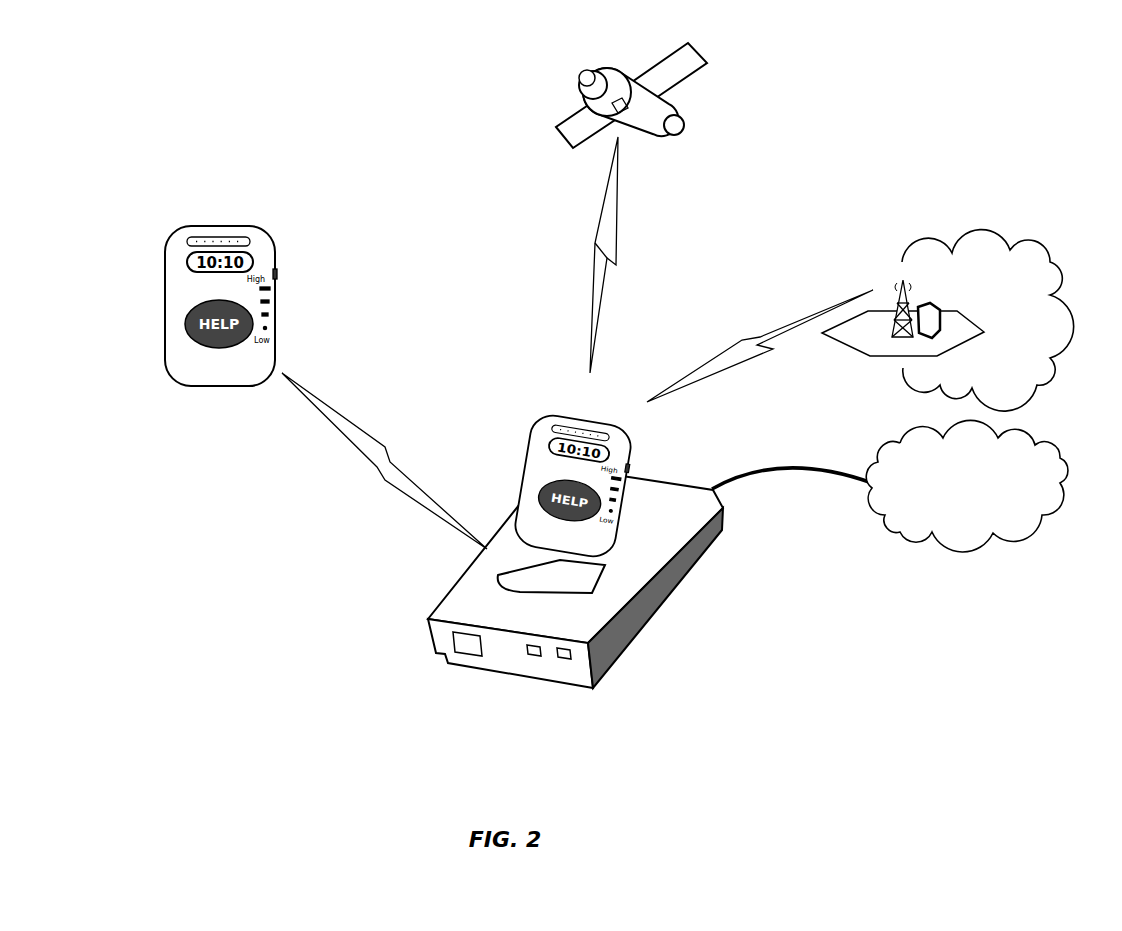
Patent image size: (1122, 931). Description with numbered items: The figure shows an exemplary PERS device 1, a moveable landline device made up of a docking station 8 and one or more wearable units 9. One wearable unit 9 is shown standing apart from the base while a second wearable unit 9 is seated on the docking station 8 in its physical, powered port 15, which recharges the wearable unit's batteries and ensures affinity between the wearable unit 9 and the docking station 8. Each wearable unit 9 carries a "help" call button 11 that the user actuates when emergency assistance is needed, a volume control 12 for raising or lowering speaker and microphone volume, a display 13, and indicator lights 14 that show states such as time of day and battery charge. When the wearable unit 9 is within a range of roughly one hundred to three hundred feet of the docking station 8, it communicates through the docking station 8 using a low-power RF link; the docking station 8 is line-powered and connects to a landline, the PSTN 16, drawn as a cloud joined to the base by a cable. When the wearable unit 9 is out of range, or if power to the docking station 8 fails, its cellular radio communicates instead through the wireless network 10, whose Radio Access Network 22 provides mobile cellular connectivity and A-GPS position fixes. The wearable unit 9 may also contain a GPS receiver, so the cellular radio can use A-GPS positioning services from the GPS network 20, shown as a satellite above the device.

The PERS device 1 is at (575, 617).
The docking station 8 is at (502, 672).
The wearable unit 9 is at (383, 351).
The wireless network 10 is at (948, 321).
The call button 11 is at (190, 313).
The volume control 12 is at (281, 275).
The display 13 is at (192, 258).
The indicator light 14 is at (203, 238).
The powered port 15 is at (577, 577).
The PSTN 16 is at (967, 486).
The GPS network 20 is at (660, 95).
The Radio Access Network 22 is at (903, 323).